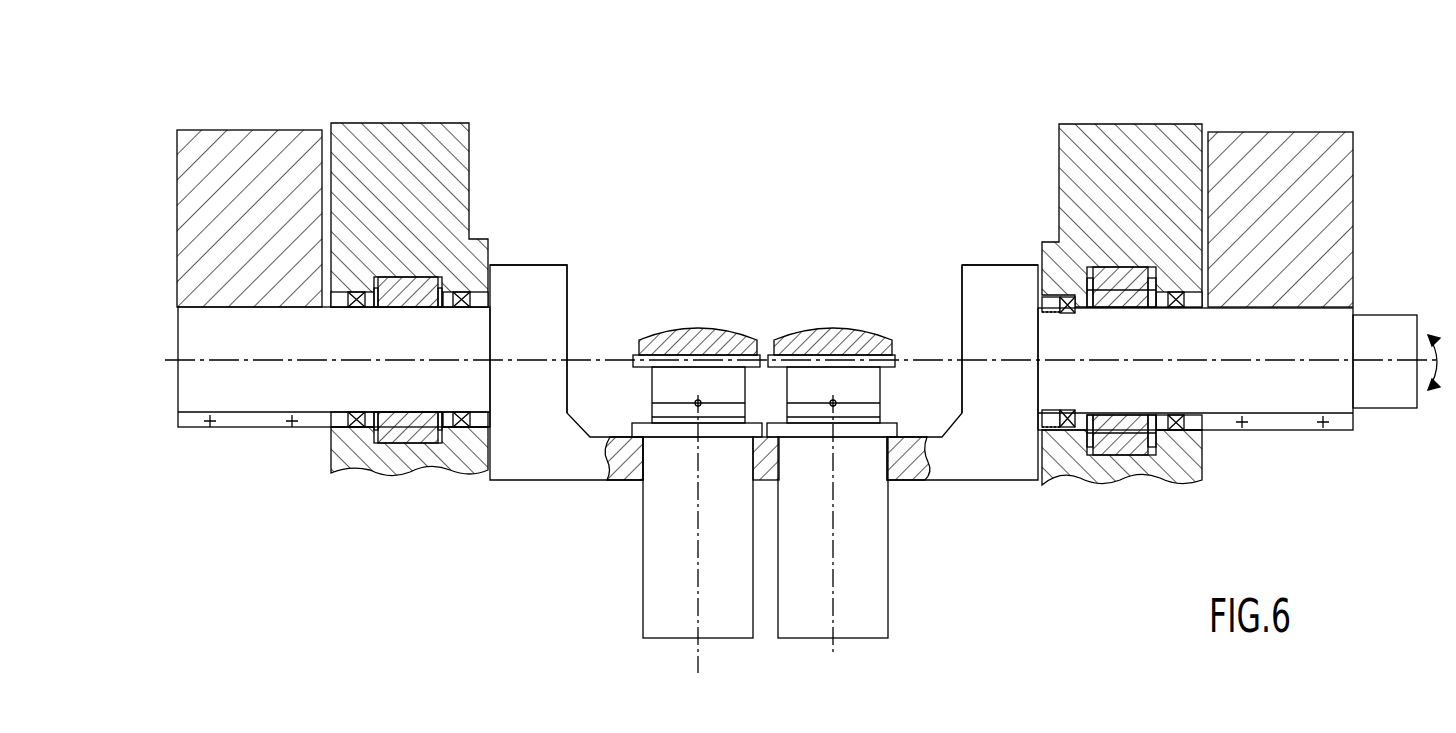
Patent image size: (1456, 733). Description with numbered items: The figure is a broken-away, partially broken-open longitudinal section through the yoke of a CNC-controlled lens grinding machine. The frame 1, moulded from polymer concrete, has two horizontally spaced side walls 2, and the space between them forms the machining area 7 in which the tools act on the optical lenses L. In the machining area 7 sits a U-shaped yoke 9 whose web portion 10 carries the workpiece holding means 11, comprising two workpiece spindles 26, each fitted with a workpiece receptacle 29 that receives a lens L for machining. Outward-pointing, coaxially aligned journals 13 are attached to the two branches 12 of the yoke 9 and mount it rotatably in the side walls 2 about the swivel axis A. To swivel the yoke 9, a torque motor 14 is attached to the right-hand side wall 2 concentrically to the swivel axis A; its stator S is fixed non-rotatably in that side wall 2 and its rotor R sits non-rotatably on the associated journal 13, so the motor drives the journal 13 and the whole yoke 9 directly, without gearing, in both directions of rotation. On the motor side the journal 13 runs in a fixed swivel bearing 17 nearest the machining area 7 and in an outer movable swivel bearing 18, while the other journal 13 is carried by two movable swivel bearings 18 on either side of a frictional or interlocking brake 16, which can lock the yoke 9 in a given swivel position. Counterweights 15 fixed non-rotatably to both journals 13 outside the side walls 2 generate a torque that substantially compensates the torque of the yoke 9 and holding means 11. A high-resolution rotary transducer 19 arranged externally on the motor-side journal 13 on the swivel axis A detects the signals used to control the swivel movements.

The frame 1 is at (398, 475).
The side walls 2 is at (394, 132).
The machining area 7 is at (908, 170).
The yoke 9 is at (950, 486).
The web portion 10 is at (556, 458).
The workpiece holding means 11 is at (895, 405).
The branches 12 is at (548, 283).
The journals 13 is at (193, 318).
The torque motor 14 is at (1097, 466).
The counterweights 15 is at (240, 136).
The brake 16 is at (438, 445).
The swivel bearing 17 is at (1067, 297).
The swivel bearing 18 is at (354, 428).
The rotary transducer 19 is at (1368, 330).
The workpiece spindle 26 is at (657, 540).
The workpiece receptacle 29 is at (668, 378).
The swivel axis A is at (1393, 362).
The lenses L is at (805, 328).
The rotor R is at (1140, 458).
The stator S is at (1108, 268).